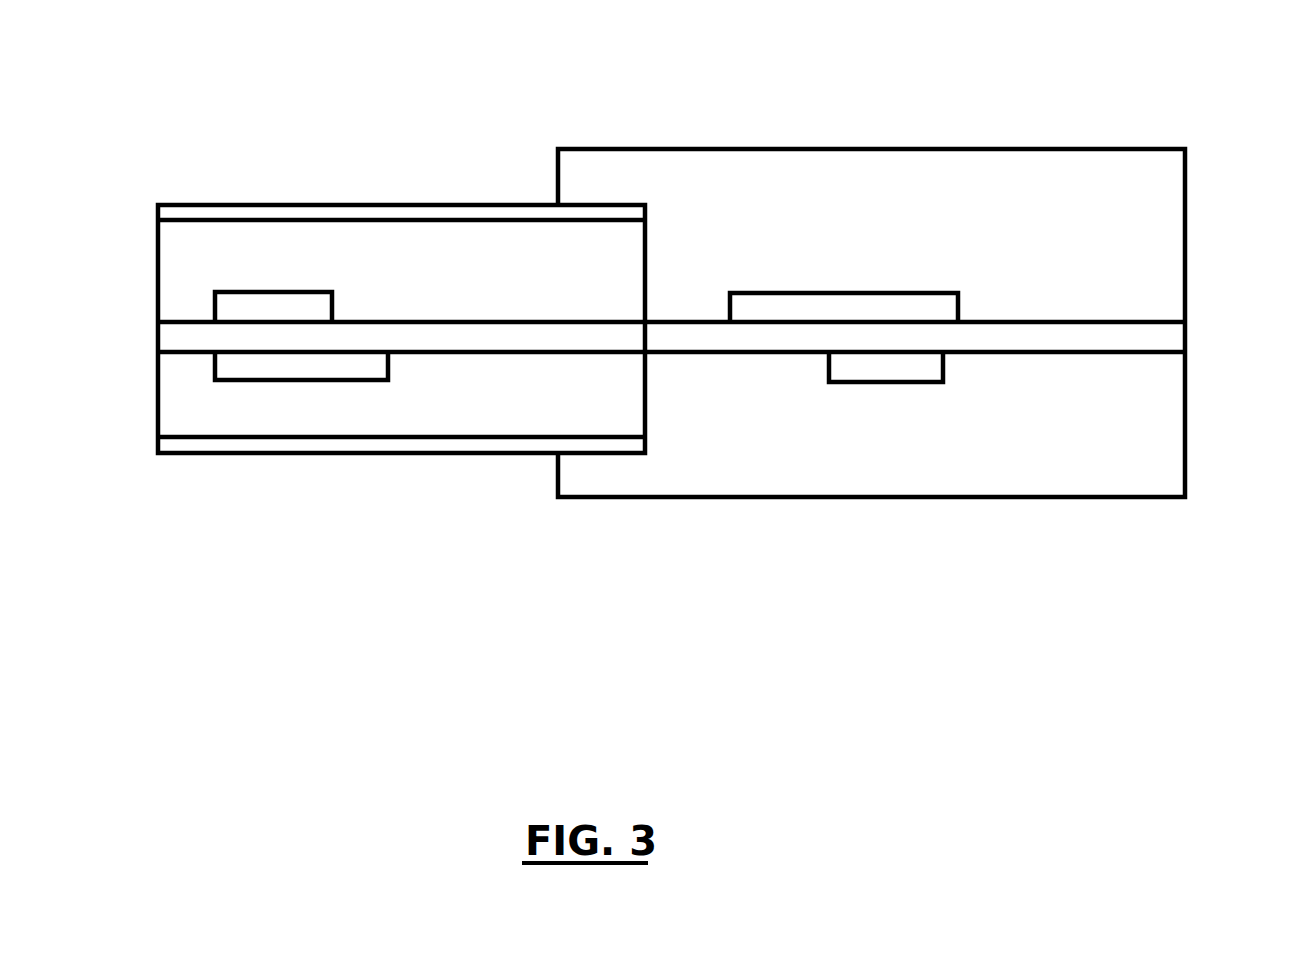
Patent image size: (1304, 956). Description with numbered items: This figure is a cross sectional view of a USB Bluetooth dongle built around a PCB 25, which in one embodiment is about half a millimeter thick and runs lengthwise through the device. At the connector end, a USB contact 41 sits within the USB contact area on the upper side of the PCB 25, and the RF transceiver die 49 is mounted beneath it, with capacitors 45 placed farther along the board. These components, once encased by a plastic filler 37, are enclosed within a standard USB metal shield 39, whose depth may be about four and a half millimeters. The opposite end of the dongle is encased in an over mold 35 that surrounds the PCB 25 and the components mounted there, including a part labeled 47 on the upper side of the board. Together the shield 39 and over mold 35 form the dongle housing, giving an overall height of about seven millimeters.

The PCB 25 is at (1185, 338).
The over mold 35 is at (1073, 149).
The plastic filler 37 is at (428, 440).
The USB metal shield 39 is at (158, 455).
The USB contact 41 is at (215, 292).
The capacitors 45 is at (900, 382).
The component 47 is at (843, 292).
The RF transceiver die 49 is at (215, 380).